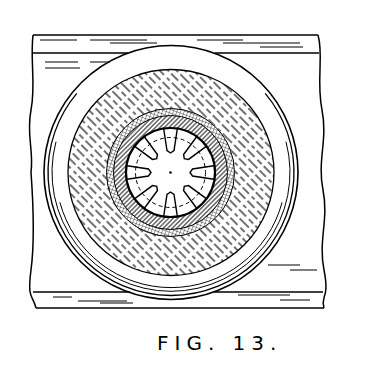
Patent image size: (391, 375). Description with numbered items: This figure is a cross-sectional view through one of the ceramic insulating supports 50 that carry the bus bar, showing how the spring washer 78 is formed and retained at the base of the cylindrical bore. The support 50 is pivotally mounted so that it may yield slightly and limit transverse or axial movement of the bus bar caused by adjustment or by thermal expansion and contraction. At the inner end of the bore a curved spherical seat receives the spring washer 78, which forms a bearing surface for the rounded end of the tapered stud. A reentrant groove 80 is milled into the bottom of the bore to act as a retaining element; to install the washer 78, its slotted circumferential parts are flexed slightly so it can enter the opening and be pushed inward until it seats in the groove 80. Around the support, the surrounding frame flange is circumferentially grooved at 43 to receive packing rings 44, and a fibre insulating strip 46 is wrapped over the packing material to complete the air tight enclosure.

The circumferential groove 43 is at (45, 275).
The packing ring 44 is at (40, 71).
The fibre insulating strip 46 is at (264, 44).
The ceramic insulating support 50 is at (245, 273).
The spring washer 78 is at (176, 210).
The reentrant groove 80 is at (163, 212).